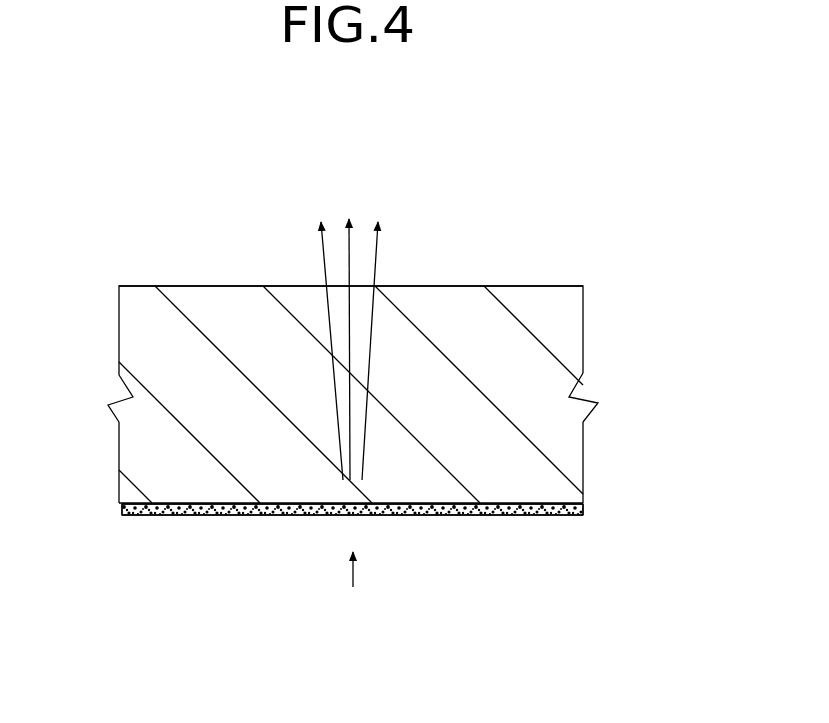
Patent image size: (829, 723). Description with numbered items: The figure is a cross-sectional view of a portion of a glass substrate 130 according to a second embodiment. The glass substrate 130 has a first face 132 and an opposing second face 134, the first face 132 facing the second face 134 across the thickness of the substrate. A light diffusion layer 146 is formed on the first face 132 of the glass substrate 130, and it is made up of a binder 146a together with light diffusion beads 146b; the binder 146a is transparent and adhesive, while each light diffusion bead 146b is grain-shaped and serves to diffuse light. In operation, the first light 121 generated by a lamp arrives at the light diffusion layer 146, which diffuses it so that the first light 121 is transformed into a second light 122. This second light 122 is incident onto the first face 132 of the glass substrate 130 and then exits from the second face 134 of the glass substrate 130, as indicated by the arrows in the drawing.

The first light 121 is at (356, 573).
The second light 122 is at (378, 232).
The glass substrate 130 is at (557, 358).
The first face 132 is at (562, 500).
The second face 134 is at (560, 287).
The light diffusion layer 146 is at (592, 530).
The binder 146a is at (122, 509).
The light diffusion bead 146b is at (122, 516).